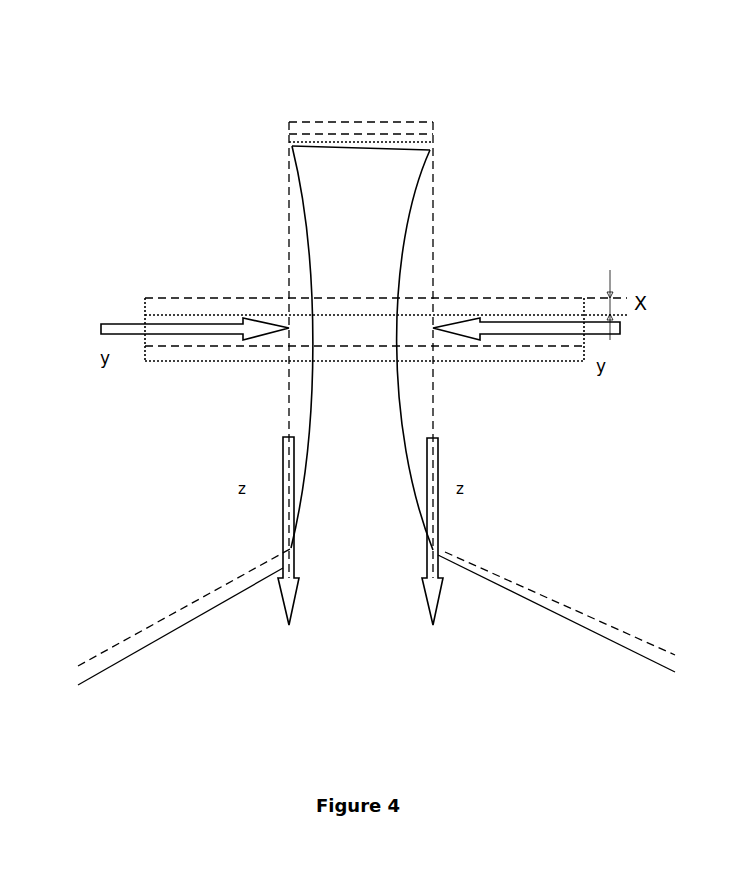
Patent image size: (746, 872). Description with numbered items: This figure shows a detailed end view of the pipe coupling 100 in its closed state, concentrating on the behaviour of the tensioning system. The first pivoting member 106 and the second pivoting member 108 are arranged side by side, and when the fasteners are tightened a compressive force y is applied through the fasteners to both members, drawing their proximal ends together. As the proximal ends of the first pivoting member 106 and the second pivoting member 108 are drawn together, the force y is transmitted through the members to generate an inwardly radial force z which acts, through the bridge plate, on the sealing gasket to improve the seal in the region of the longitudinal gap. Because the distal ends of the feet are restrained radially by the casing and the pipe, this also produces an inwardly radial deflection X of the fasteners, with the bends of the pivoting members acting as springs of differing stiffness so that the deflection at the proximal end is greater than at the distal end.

The pipe coupling 100 is at (203, 318).
The first pivoting member 106 is at (290, 122).
The second pivoting member 108 is at (433, 203).